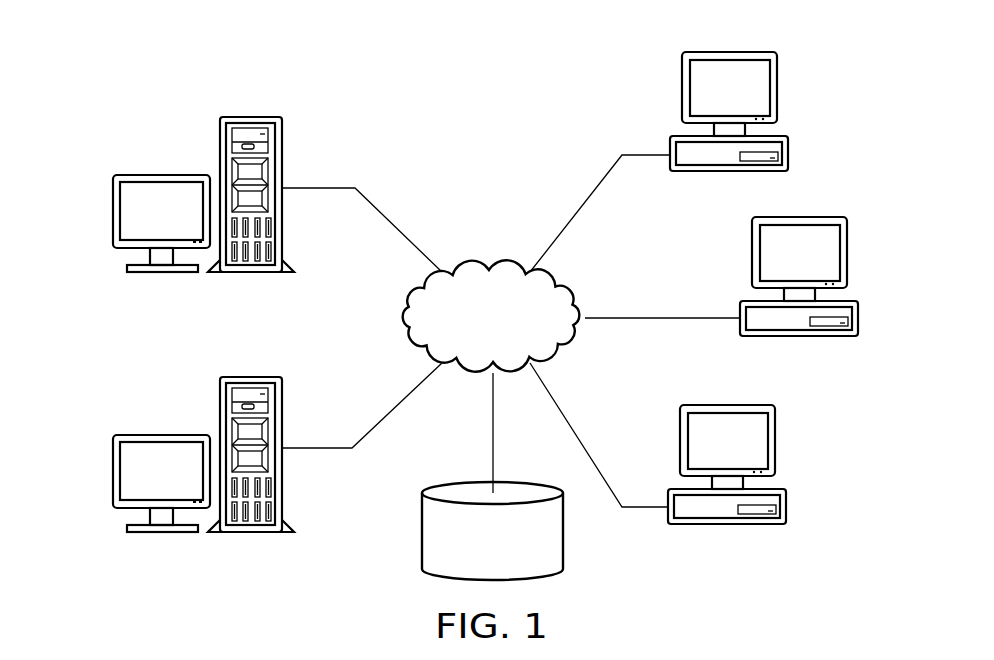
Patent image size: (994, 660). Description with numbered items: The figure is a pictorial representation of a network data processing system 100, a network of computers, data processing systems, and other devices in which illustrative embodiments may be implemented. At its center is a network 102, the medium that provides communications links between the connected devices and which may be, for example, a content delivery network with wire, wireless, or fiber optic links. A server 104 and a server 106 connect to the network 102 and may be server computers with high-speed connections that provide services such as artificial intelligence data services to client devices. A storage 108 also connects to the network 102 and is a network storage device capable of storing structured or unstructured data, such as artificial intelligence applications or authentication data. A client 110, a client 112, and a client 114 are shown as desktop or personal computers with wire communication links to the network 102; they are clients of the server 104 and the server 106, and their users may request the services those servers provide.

The network data processing system 100 is at (358, 100).
The network 102 is at (462, 262).
The server 104 is at (113, 212).
The server 106 is at (113, 470).
The storage 108 is at (422, 530).
The client 110 is at (790, 143).
The client 112 is at (862, 328).
The client 114 is at (792, 515).